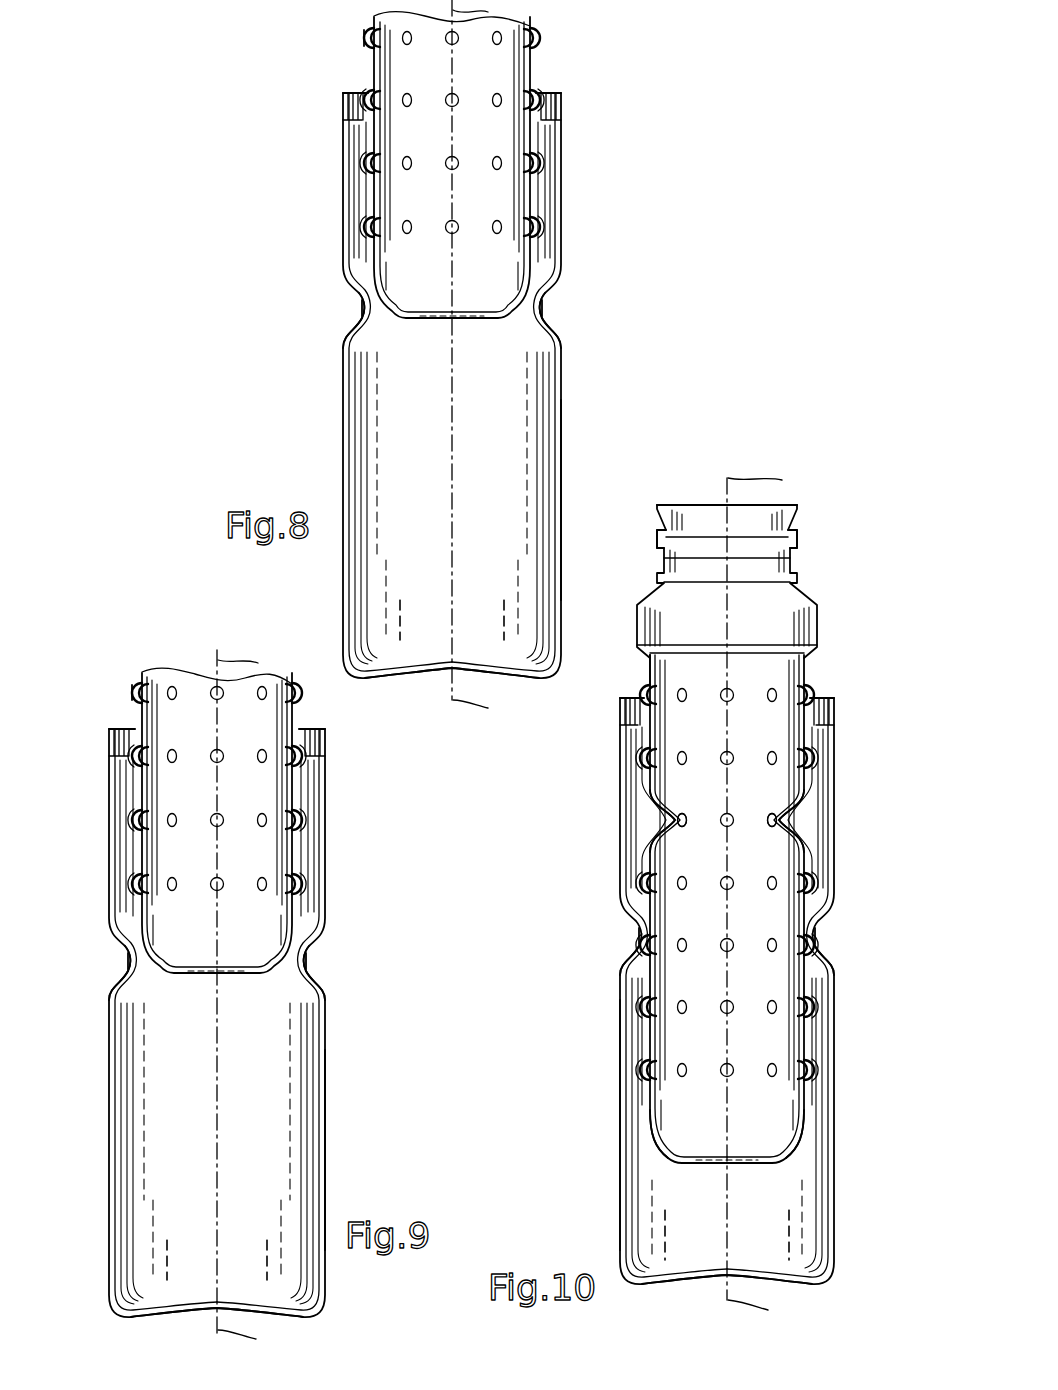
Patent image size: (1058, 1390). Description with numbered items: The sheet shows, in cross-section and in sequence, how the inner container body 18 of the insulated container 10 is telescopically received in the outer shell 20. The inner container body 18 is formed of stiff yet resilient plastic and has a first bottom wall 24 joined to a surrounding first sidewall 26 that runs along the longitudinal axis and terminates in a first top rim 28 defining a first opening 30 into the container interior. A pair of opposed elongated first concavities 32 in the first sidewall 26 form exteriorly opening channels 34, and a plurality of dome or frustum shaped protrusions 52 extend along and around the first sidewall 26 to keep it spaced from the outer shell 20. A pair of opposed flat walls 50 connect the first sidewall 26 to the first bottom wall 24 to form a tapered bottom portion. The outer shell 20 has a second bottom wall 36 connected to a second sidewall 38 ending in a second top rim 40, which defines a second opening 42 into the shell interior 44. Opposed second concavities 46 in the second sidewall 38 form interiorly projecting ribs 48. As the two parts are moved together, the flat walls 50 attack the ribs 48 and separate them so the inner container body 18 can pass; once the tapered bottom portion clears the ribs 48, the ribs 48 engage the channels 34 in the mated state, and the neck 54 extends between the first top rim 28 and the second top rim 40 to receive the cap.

In FIG. 8, the insulated container 10 is at (604, 170).
In FIG. 9, the insulated container 10 is at (384, 790).
In FIG. 10, the insulated container 10 is at (811, 571).
In FIG. 8, the inner container body 18 is at (552, 66).
In FIG. 9, the inner container body 18 is at (308, 710).
In FIG. 10, the inner container body 18 is at (713, 933).
In FIG. 8, the outer shell 20 is at (562, 394).
In FIG. 9, the outer shell 20 is at (342, 1082).
In FIG. 10, the outer shell 20 is at (830, 602).
In FIG. 8, the first bottom wall 24 is at (466, 322).
In FIG. 9, the first bottom wall 24 is at (240, 975).
In FIG. 10, the first bottom wall 24 is at (730, 1165).
In FIG. 8, the first sidewall 26 is at (364, 48).
In FIG. 9, the first sidewall 26 is at (141, 674).
In FIG. 10, the first sidewall 26 is at (650, 660).
In FIG. 10, the first top rim 28 is at (799, 506).
In FIG. 10, the first opening 30 is at (708, 503).
In FIG. 10, the first concavities 32 is at (664, 818).
In FIG. 10, the channels 34 is at (669, 822).
In FIG. 8, the second bottom wall 36 is at (448, 668).
In FIG. 9, the second bottom wall 36 is at (289, 1310).
In FIG. 10, the second bottom wall 36 is at (798, 1286).
In FIG. 8, the second sidewall 38 is at (557, 508).
In FIG. 9, the second sidewall 38 is at (331, 1138).
In FIG. 10, the second sidewall 38 is at (619, 1225).
In FIG. 8, the second top rim 40 is at (562, 104).
In FIG. 9, the second top rim 40 is at (121, 728).
In FIG. 10, the second top rim 40 is at (817, 699).
In FIG. 8, the second opening 42 is at (353, 95).
In FIG. 9, the second opening 42 is at (309, 718).
In FIG. 10, the second opening 42 is at (640, 699).
In FIG. 8, the shell interior 44 is at (498, 506).
In FIG. 9, the shell interior 44 is at (191, 1080).
In FIG. 10, the shell interior 44 is at (720, 1262).
In FIG. 8, the second concavities 46 is at (360, 316).
In FIG. 9, the second concavities 46 is at (129, 940).
In FIG. 10, the second concavities 46 is at (636, 922).
In FIG. 8, the ribs 48 is at (538, 340).
In FIG. 9, the ribs 48 is at (149, 977).
In FIG. 10, the ribs 48 is at (622, 958).
In FIG. 8, the flat walls 50 is at (546, 302).
In FIG. 9, the flat walls 50 is at (126, 960).
In FIG. 10, the flat walls 50 is at (661, 1135).
In FIG. 8, the protrusions 52 is at (346, 170).
In FIG. 9, the protrusions 52 is at (301, 870).
In FIG. 10, the protrusions 52 is at (634, 1056).
In FIG. 10, the neck 54 is at (799, 540).